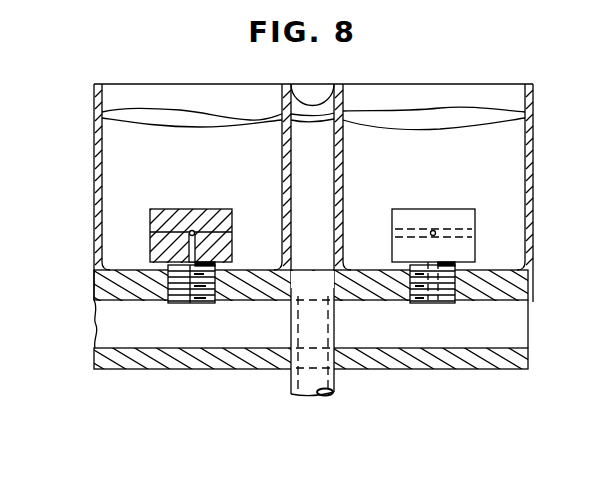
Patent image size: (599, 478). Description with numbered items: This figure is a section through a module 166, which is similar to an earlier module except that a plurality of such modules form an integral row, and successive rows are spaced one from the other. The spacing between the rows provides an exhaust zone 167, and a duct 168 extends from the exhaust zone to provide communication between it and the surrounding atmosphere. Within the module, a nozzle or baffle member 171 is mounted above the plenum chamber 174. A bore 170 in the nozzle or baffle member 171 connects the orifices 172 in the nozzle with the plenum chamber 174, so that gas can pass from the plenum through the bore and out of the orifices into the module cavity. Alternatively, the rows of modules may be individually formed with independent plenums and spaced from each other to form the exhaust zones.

The module 166 is at (80, 115).
The exhaust zone 167 is at (328, 88).
The duct 168 is at (306, 393).
The bore 170 is at (190, 250).
The nozzle or baffle member 171 is at (395, 215).
The orifice 172 is at (156, 234).
The plenum chamber 174 is at (112, 340).